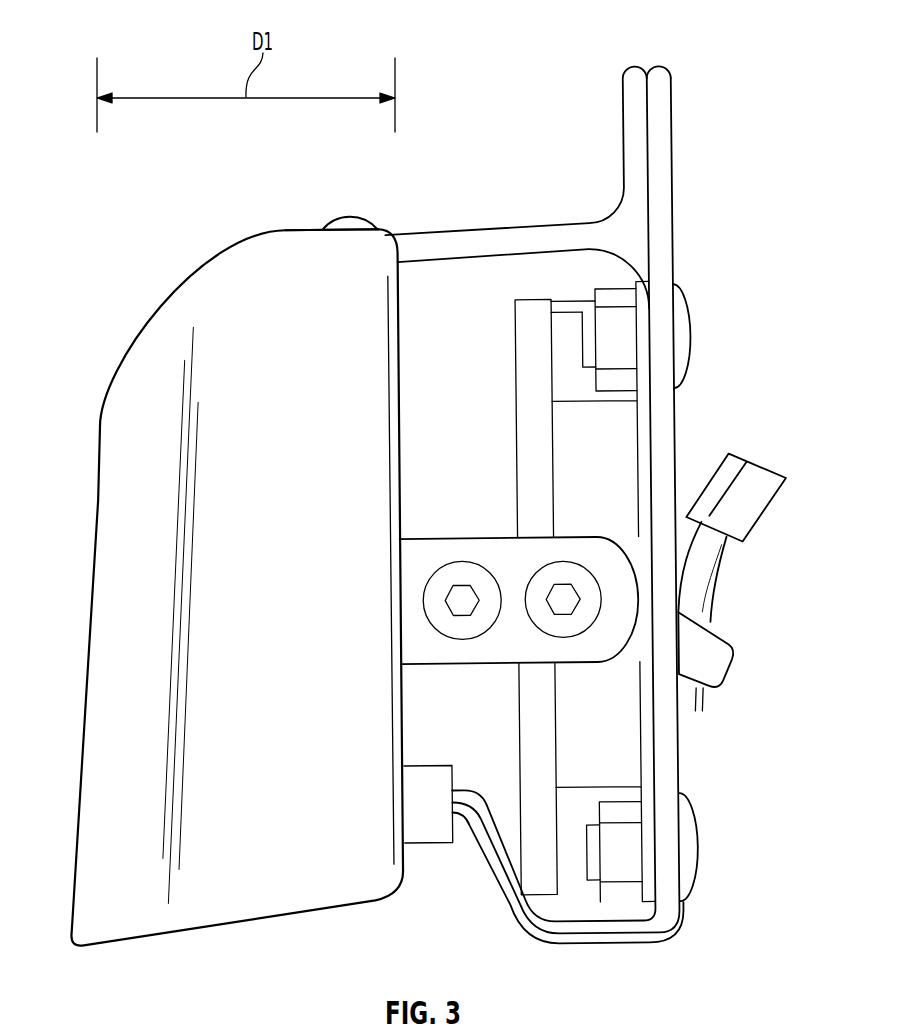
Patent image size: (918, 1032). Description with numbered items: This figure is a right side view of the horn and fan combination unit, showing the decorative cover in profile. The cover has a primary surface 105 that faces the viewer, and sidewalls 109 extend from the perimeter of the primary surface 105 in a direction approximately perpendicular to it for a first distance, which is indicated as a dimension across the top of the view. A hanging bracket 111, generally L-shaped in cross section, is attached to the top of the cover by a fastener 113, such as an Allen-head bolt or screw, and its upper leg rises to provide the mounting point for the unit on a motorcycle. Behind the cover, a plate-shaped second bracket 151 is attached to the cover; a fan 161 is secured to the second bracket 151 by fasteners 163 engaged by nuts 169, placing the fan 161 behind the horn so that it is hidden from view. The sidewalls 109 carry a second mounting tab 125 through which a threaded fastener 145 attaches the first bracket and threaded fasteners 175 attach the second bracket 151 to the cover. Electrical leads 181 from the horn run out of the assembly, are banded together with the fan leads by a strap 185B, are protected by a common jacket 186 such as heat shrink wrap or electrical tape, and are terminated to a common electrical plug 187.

The primary surface 105 is at (94, 568).
The sidewalls 109 is at (291, 226).
The fastener 113 is at (352, 214).
The hanging bracket 111 is at (562, 235).
The second bracket 151 is at (672, 180).
The fan 161 is at (528, 357).
The fasteners 163 is at (588, 332).
The nuts 169 is at (614, 324).
The second mounting tab 125 is at (450, 537).
The threaded fastener 145 is at (462, 630).
The threaded fasteners 175 is at (537, 623).
The common electrical plug 187 is at (762, 498).
The common jacket 186 is at (700, 590).
The strap 185B is at (720, 659).
The electrical leads 181 is at (480, 908).